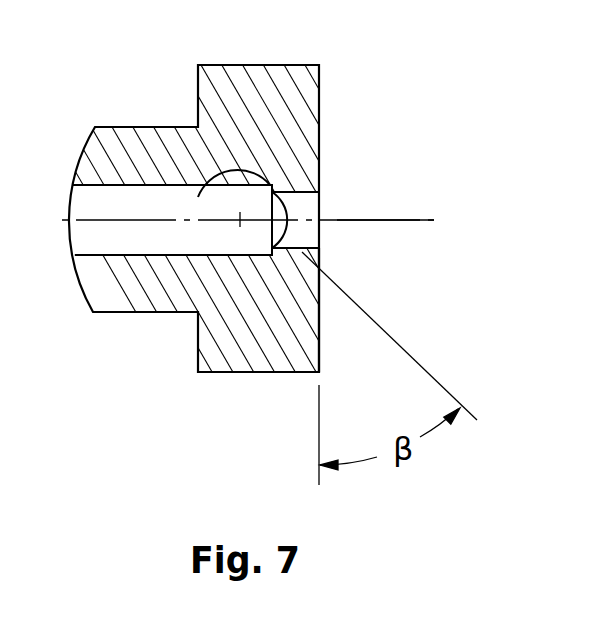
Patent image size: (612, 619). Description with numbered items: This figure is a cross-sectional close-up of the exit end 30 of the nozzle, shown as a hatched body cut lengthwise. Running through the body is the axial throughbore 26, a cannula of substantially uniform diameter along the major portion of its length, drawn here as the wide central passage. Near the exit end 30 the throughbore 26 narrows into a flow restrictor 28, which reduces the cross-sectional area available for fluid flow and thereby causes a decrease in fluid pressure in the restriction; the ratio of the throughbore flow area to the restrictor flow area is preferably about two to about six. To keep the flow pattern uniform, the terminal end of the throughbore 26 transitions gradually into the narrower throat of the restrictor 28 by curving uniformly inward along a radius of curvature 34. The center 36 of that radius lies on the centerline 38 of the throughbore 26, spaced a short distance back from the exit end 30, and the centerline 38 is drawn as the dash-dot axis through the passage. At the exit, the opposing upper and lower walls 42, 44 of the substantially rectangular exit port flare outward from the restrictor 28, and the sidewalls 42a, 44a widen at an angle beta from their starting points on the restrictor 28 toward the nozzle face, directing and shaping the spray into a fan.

The axial throughbore 26 is at (108, 205).
The flow restrictor 28 is at (297, 208).
The exit end 30 is at (348, 112).
The radius of curvature 34 is at (197, 207).
The center 36 is at (240, 224).
The centerline 38 is at (414, 238).
The upper wall 42 is at (300, 192).
The sidewall 42a is at (289, 210).
The lower wall 44 is at (322, 268).
The sidewall 44a is at (300, 248).